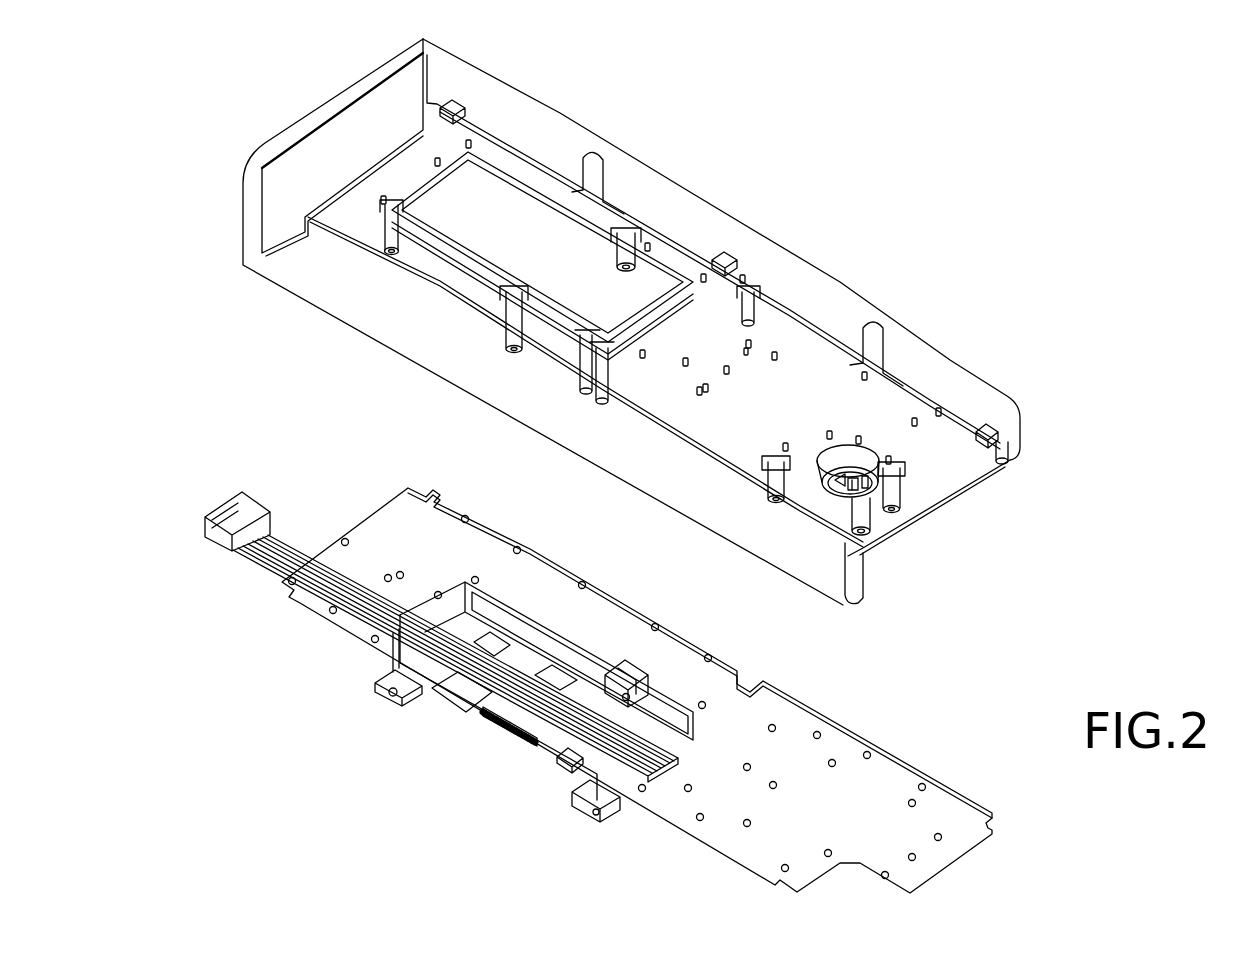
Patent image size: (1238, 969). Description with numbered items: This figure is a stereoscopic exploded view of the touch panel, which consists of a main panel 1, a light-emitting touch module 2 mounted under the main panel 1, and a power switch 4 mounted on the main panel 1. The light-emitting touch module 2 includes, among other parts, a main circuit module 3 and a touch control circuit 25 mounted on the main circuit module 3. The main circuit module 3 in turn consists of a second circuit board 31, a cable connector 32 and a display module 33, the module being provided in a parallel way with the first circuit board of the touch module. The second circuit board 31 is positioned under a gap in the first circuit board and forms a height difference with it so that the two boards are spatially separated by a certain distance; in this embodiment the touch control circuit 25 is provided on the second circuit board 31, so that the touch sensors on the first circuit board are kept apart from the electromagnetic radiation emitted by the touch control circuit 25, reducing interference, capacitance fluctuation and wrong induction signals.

The main panel 1 is at (328, 155).
The light-emitting touch module 2 is at (397, 523).
The main circuit module 3 is at (283, 663).
The power switch 4 is at (845, 462).
The touch control circuit 25 is at (558, 753).
The second circuit board 31 is at (470, 717).
The cable connector 32 is at (513, 745).
The display module 33 is at (385, 650).